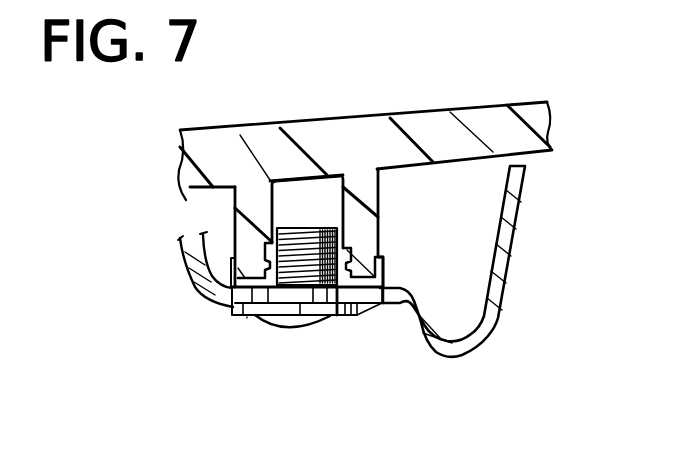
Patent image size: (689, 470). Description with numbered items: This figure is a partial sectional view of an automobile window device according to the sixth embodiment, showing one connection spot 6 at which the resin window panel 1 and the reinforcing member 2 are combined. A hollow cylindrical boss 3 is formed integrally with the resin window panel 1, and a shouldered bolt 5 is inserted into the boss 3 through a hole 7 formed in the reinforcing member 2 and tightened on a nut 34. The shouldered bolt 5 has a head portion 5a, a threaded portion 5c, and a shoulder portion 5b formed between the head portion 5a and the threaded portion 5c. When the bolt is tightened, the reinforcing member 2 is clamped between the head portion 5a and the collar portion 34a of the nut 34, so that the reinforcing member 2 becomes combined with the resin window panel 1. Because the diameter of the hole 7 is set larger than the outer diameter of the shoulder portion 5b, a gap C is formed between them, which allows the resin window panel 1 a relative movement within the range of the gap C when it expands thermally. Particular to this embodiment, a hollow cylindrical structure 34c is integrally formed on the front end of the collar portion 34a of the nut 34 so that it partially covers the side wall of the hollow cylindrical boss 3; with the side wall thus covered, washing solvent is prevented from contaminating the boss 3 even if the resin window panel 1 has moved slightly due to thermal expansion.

The resin window panel 1 is at (385, 117).
The reinforcing member 2 is at (473, 355).
The hollow cylindrical boss 3 is at (365, 216).
The nut 34 is at (370, 240).
The collar portion 34a is at (225, 313).
The hollow cylindrical structure 34c is at (385, 275).
The shouldered bolt 5 is at (305, 322).
The head portion 5a is at (345, 318).
The shoulder portion 5b is at (320, 320).
The threaded portion 5c is at (308, 228).
The connection spot 6 is at (280, 337).
The hole 7 is at (360, 307).
The gap C is at (247, 317).